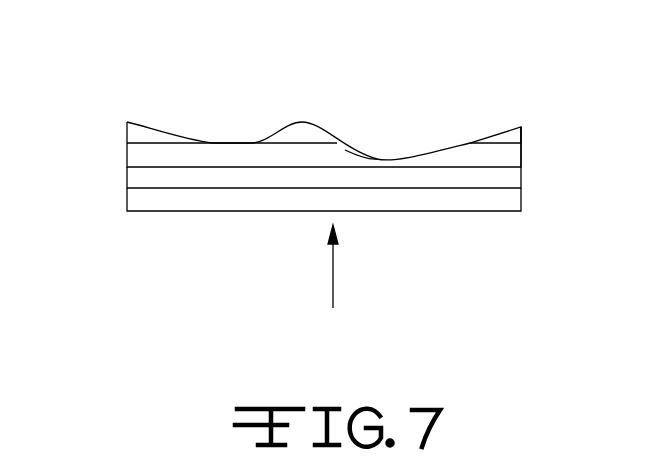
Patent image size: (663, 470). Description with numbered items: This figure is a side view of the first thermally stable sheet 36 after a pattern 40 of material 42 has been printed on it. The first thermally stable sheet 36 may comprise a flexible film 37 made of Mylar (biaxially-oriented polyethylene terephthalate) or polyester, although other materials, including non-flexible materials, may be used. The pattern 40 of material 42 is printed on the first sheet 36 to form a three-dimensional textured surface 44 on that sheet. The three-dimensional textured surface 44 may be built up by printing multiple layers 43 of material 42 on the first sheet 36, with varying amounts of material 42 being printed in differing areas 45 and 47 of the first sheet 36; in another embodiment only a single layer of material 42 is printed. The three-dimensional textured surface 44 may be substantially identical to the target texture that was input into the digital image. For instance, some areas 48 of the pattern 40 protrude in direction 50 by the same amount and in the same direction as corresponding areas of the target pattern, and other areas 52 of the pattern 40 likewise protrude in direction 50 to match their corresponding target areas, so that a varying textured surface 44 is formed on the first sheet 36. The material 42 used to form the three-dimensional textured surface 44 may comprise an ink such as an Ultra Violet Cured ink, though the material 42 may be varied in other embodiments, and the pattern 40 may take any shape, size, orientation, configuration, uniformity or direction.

The first thermally stable sheet 36 is at (235, 211).
The flexible film 37 is at (428, 202).
The pattern 40 is at (473, 140).
The material 42 is at (274, 90).
The three-dimensional textured surface 44 is at (274, 90).
The area 45 is at (152, 123).
The area 47 is at (314, 91).
The area 48 is at (300, 119).
The area 52 is at (388, 158).
The layer 43 is at (521, 138).
The direction 50 is at (336, 278).